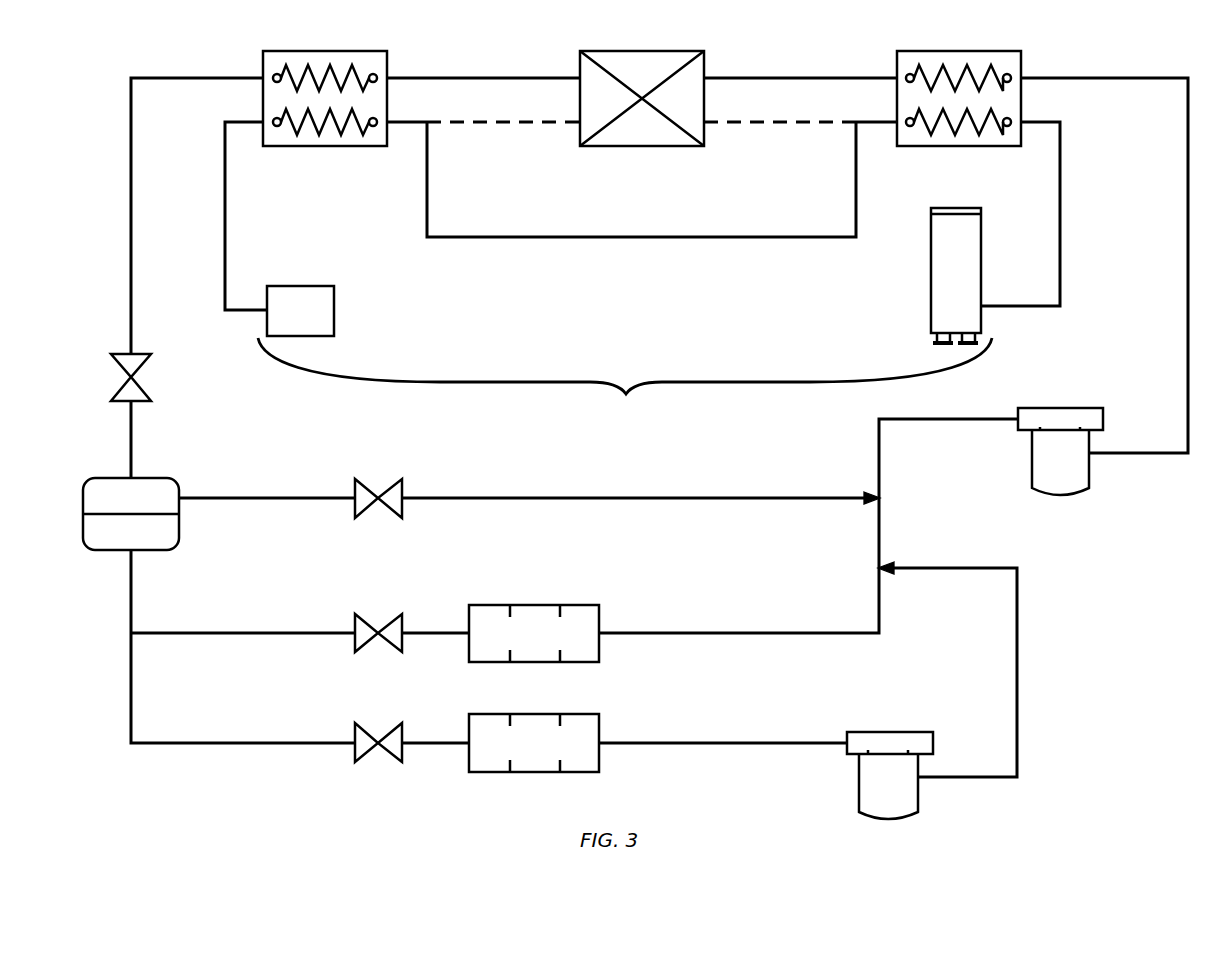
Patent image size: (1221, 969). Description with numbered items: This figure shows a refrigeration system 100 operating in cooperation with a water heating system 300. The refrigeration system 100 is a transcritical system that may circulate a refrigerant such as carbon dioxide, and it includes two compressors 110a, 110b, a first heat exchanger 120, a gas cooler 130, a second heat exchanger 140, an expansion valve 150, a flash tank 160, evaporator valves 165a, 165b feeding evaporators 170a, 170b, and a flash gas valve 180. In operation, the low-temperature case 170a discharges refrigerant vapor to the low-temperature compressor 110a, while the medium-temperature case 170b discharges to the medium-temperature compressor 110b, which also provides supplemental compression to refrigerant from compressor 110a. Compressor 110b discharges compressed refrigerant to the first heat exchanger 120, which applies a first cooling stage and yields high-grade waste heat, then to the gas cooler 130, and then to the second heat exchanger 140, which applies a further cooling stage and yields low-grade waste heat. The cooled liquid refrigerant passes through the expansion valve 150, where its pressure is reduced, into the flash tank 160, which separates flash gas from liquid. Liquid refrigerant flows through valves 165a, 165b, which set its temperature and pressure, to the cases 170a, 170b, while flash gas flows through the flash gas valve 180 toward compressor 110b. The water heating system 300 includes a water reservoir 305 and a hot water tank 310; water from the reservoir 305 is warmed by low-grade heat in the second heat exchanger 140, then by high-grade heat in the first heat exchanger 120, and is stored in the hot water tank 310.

The refrigeration system 100 is at (1104, 629).
The first compressor 110a is at (882, 732).
The second compressor 110b is at (1068, 496).
The first heat exchanger 120 is at (929, 51).
The gas cooler 130 is at (636, 146).
The second heat exchanger 140 is at (357, 51).
The expansion valve 150 is at (146, 365).
The flash tank 160 is at (179, 548).
The first evaporator valve 165a is at (390, 758).
The second evaporator valve 165b is at (390, 648).
The first evaporator 170a is at (580, 772).
The second evaporator 170b is at (580, 662).
The flash gas valve 180 is at (372, 510).
The water heating system 300 is at (625, 380).
The water reservoir 305 is at (300, 311).
The hot water tank 310 is at (931, 278).